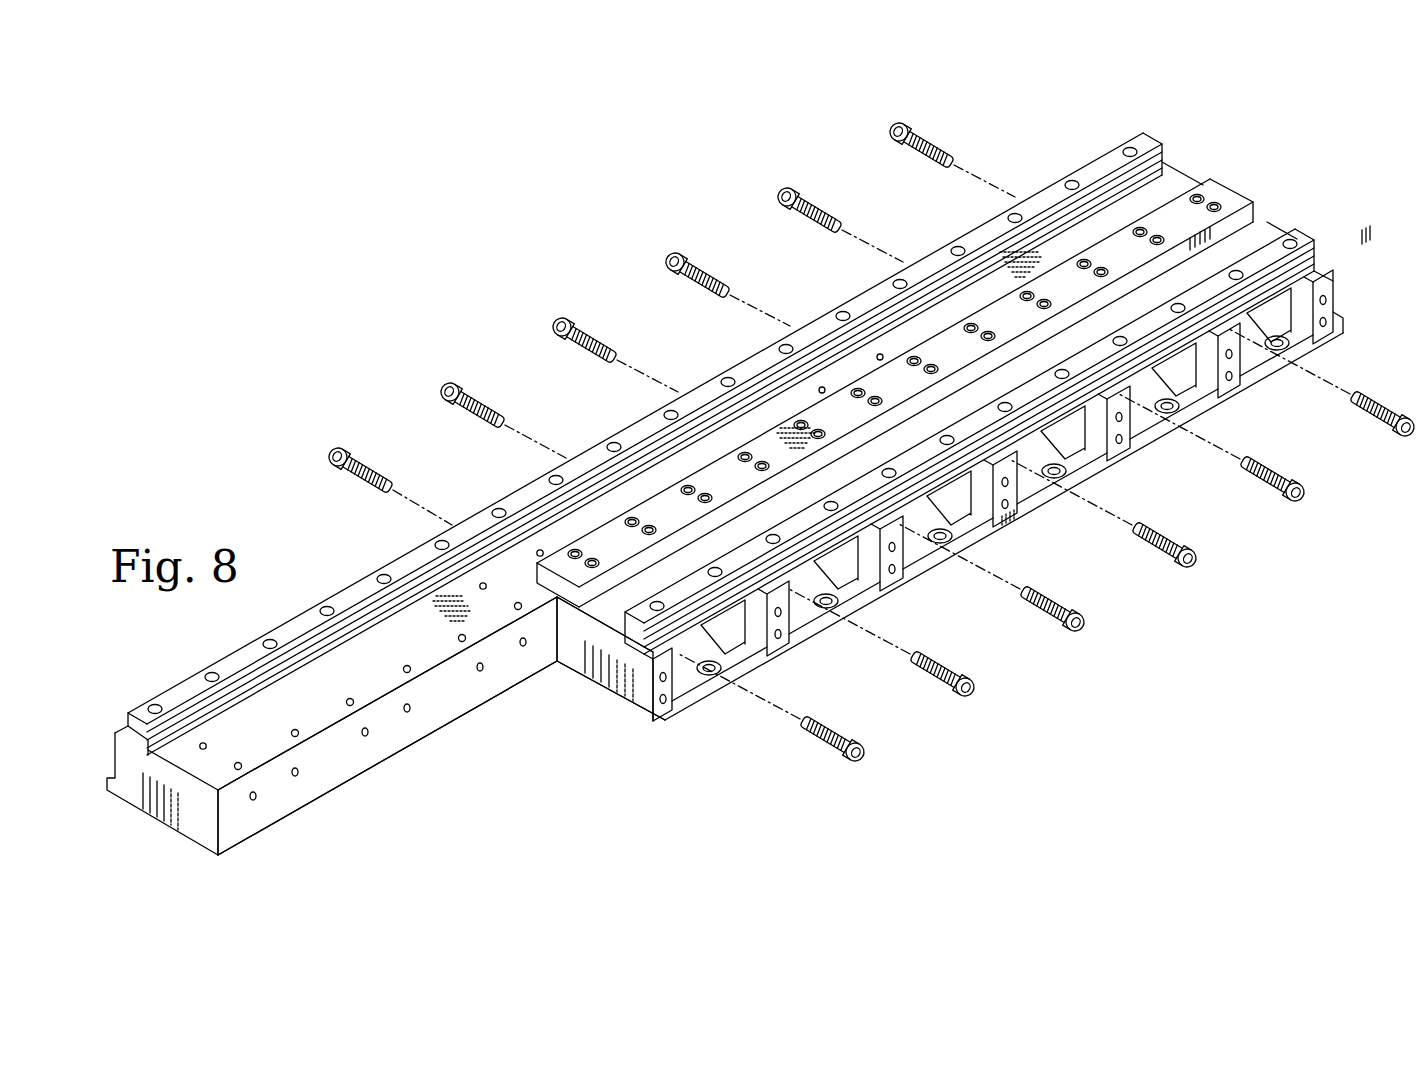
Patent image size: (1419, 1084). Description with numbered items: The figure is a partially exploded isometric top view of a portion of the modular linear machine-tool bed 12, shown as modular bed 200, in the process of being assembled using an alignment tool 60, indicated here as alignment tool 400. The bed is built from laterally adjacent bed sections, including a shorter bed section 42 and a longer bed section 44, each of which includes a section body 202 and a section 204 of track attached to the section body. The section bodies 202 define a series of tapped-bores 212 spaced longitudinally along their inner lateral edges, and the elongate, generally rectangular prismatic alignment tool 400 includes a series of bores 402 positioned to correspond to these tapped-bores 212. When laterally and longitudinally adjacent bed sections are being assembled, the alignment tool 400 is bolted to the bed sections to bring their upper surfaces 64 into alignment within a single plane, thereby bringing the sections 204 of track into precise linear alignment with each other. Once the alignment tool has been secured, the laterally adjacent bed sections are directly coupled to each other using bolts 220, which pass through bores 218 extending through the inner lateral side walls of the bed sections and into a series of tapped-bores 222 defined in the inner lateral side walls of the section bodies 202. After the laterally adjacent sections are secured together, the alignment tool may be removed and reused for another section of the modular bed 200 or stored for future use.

The modular linear machine-tool bed 12 is at (490, 192).
The shorter bed section 42 is at (951, 233).
The longer bed section 44 is at (336, 797).
The alignment tool 60 is at (1235, 160).
The planar surfaces 64 is at (1075, 238).
The modular bed 200 is at (572, 223).
The section body 202 is at (207, 853).
The section of track 204 is at (601, 443).
The tapped-bores 212 is at (242, 764).
The bores 218 is at (526, 646).
The bolts 220 is at (553, 325).
The tapped-bores 222 is at (483, 669).
The alignment tool 400 is at (1250, 182).
The bores 402 is at (1212, 203).